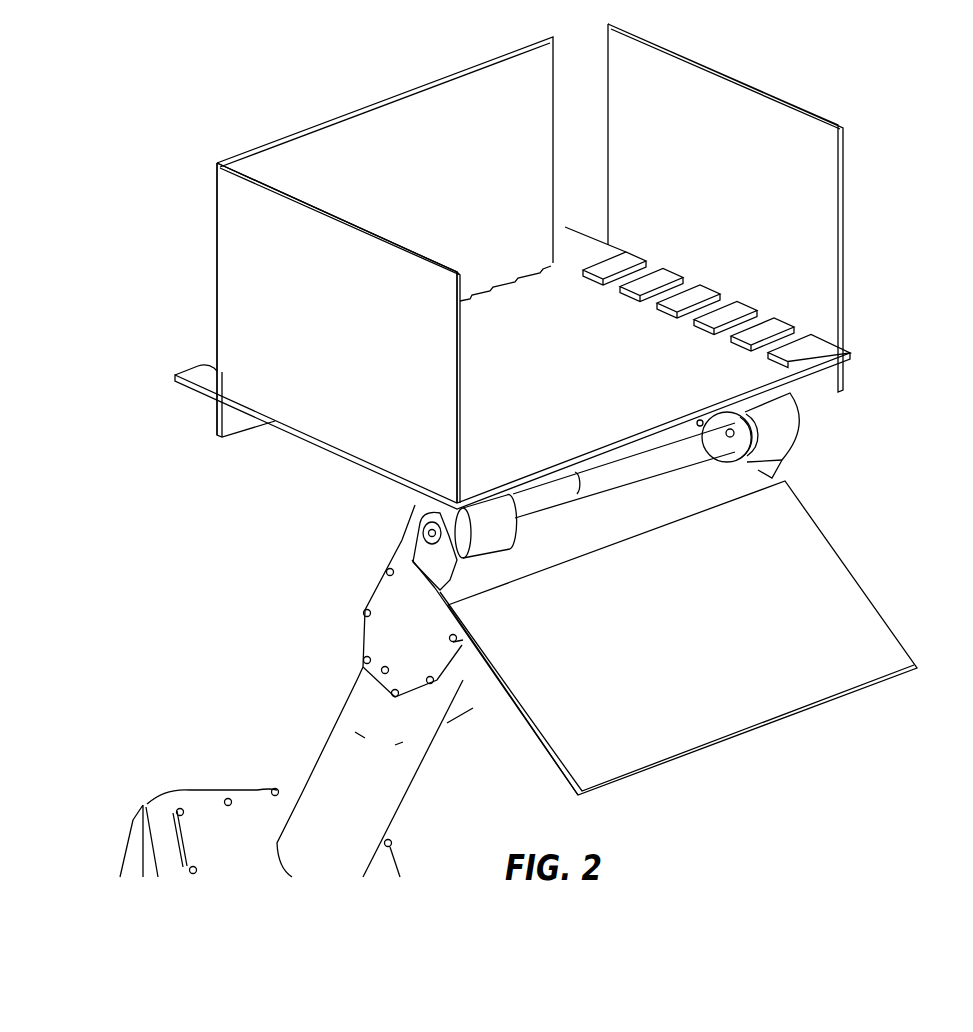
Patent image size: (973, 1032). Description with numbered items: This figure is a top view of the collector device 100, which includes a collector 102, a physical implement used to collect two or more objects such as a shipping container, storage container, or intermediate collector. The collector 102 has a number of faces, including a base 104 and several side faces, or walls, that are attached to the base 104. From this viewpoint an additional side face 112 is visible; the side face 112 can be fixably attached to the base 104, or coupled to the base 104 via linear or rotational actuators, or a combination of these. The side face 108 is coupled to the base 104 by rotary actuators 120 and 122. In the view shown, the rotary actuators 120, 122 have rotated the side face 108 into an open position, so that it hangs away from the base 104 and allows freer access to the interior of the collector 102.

The collector device 100 is at (246, 652).
The collector 102 is at (205, 300).
The base 104 is at (765, 372).
The side face 108 is at (858, 608).
The side face 112 is at (318, 410).
The rotary actuator 120 is at (420, 508).
The rotary actuator 122 is at (770, 425).